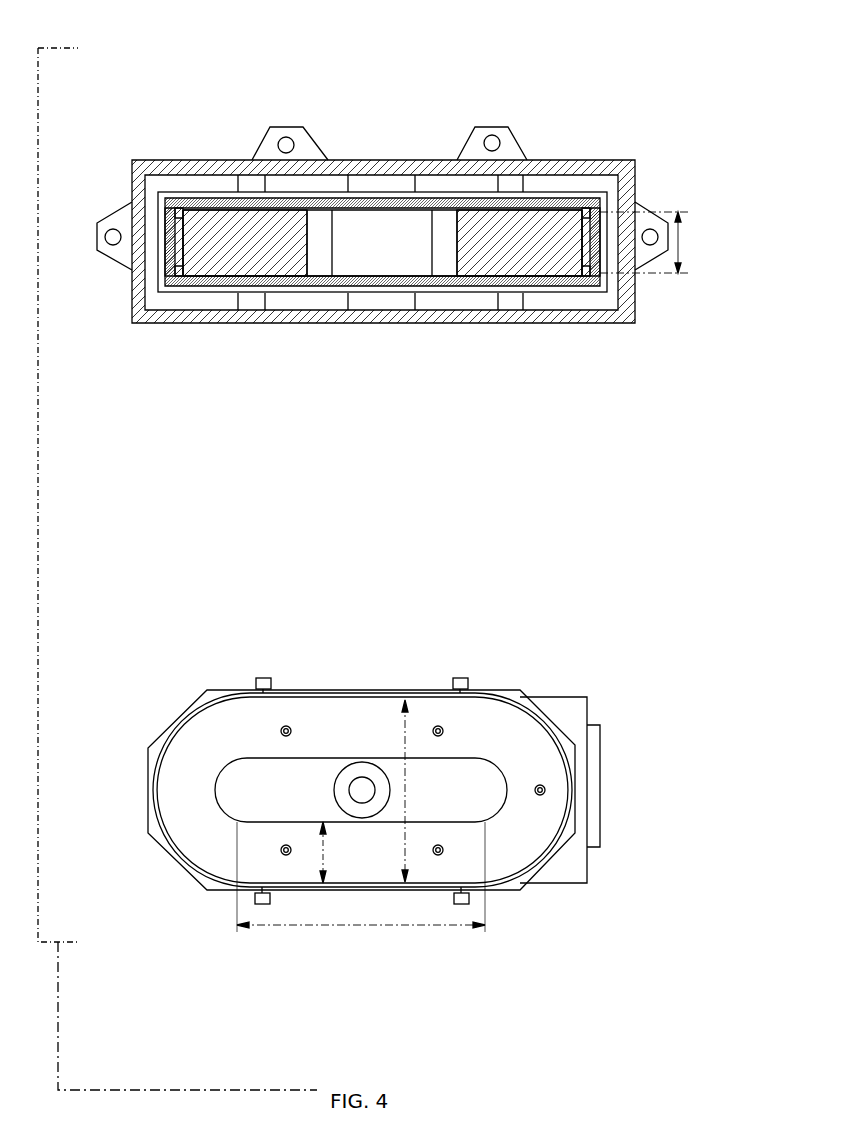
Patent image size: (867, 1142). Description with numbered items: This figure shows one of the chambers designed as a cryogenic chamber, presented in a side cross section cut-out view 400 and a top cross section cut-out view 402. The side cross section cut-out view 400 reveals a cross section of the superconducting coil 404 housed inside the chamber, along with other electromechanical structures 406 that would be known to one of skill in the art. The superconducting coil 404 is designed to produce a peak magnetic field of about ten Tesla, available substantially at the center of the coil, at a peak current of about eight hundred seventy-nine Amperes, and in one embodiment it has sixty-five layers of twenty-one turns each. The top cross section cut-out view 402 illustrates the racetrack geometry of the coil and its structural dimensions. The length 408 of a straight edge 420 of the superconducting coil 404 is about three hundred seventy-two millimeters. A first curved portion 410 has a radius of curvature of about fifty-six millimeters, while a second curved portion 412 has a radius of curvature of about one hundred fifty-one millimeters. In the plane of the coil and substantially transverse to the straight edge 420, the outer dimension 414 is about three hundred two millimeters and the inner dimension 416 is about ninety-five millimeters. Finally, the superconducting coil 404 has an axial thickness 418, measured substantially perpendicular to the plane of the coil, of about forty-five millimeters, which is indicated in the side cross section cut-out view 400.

The side cross section cut-out view 400 is at (608, 53).
The top cross section cut-out view 402 is at (628, 602).
The superconducting coil 404 is at (490, 233).
The electromechanical structures 406 is at (197, 297).
The length 408 is at (362, 927).
The first curved portion 410 is at (213, 791).
The second curved portion 412 is at (168, 752).
The outer dimension 414 is at (407, 797).
The inner dimension 416 is at (328, 852).
The axial thickness 418 is at (686, 240).
The straight edge 420 is at (312, 757).